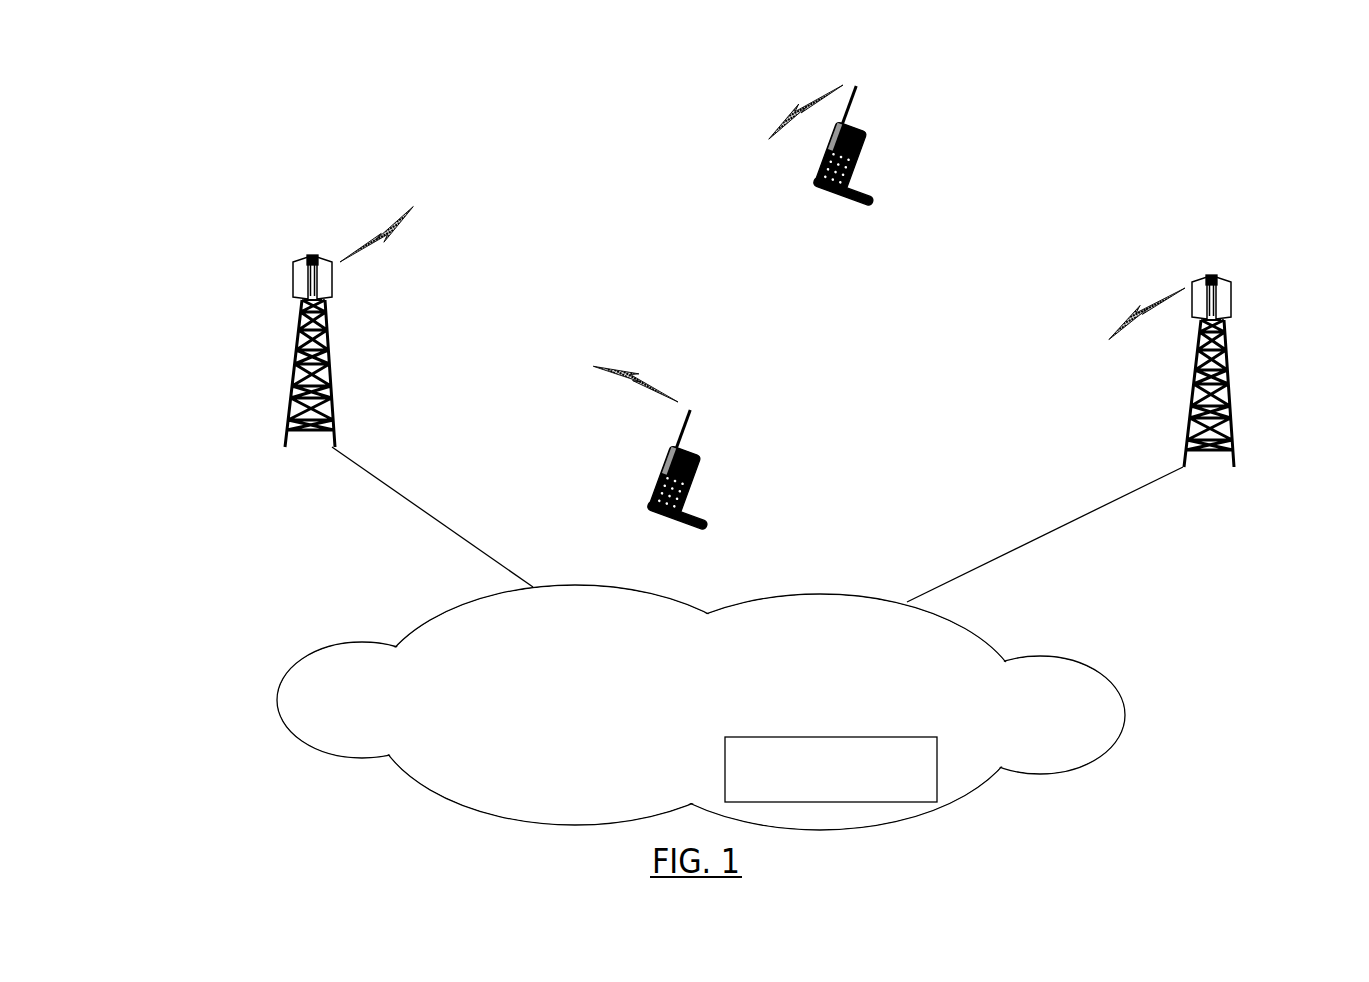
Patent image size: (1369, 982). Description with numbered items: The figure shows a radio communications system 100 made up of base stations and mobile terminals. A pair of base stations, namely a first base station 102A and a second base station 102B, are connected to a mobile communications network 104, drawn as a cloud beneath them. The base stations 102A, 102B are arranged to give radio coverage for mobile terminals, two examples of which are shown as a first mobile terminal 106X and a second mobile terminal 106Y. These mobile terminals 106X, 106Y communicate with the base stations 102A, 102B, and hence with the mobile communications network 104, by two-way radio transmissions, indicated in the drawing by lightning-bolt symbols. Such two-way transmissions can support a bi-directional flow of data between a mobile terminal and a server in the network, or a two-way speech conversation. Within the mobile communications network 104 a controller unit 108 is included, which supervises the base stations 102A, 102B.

The radio communications system 100 is at (205, 103).
The first base station 102A is at (297, 266).
The second base station 102B is at (1232, 280).
The mobile communications network 104 is at (969, 724).
The first mobile terminal 106X is at (868, 130).
The second mobile terminal 106Y is at (703, 455).
The controller unit 108 is at (886, 799).